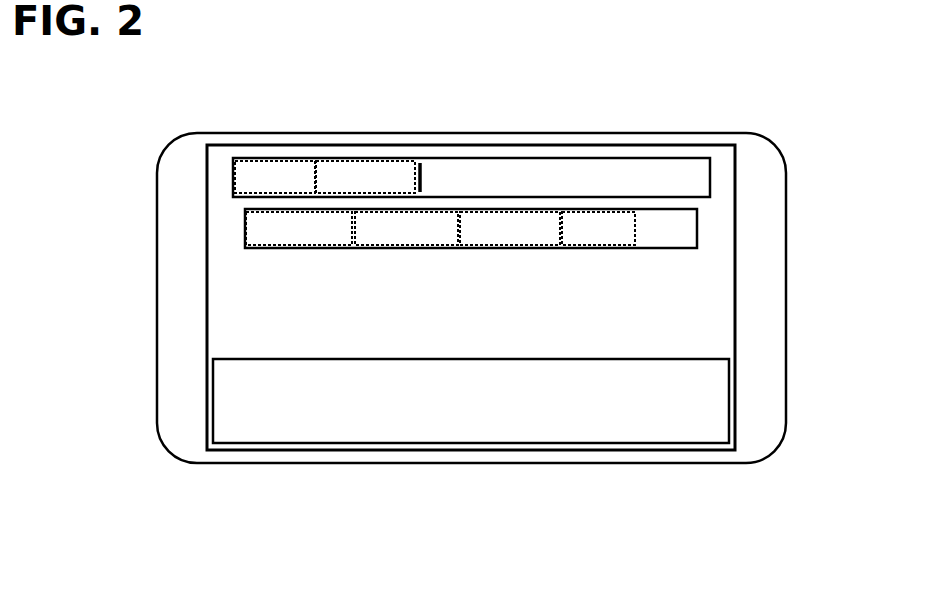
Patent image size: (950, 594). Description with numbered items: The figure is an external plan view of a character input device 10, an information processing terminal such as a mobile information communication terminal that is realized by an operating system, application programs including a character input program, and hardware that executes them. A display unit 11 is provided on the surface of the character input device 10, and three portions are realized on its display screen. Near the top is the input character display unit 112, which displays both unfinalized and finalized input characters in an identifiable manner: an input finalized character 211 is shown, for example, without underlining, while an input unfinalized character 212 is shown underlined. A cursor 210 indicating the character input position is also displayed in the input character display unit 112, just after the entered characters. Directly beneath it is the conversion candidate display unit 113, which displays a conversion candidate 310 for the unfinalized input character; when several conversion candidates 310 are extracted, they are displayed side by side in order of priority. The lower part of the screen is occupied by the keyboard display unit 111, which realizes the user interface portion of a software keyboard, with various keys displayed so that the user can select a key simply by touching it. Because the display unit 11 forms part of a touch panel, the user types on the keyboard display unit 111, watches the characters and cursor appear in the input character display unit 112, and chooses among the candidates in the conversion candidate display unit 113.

The character input device 10 is at (767, 145).
The display unit 11 is at (715, 150).
The keyboard display unit 111 is at (692, 435).
The input character display unit 112 is at (698, 175).
The conversion candidate display unit 113 is at (690, 225).
The cursor 210 is at (422, 165).
The input finalized character 211 is at (270, 160).
The input unfinalized character 212 is at (360, 160).
The conversion candidate 310 is at (243, 229).